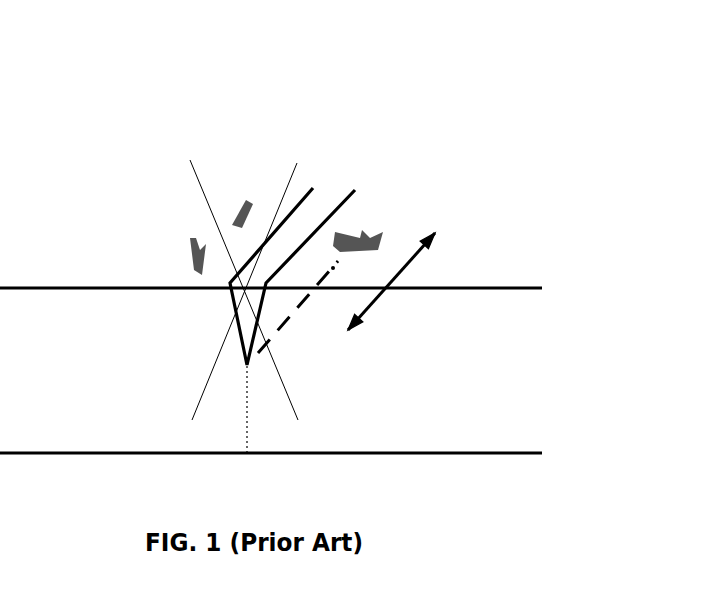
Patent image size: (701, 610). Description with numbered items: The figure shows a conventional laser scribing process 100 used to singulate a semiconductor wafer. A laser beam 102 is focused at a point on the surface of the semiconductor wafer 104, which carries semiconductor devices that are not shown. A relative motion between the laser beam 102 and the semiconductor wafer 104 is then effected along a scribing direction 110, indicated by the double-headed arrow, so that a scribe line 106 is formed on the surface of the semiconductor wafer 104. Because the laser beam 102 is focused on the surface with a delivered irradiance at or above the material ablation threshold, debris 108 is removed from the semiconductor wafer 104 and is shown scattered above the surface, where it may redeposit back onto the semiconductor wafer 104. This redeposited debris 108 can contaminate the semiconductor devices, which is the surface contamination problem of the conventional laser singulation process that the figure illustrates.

The conventional laser scribing process 100 is at (440, 122).
The laser beam 102 is at (243, 292).
The semiconductor wafer 104 is at (493, 375).
The scribe line 106 is at (223, 333).
The debris 108 is at (343, 230).
The scribing direction 110 is at (408, 268).